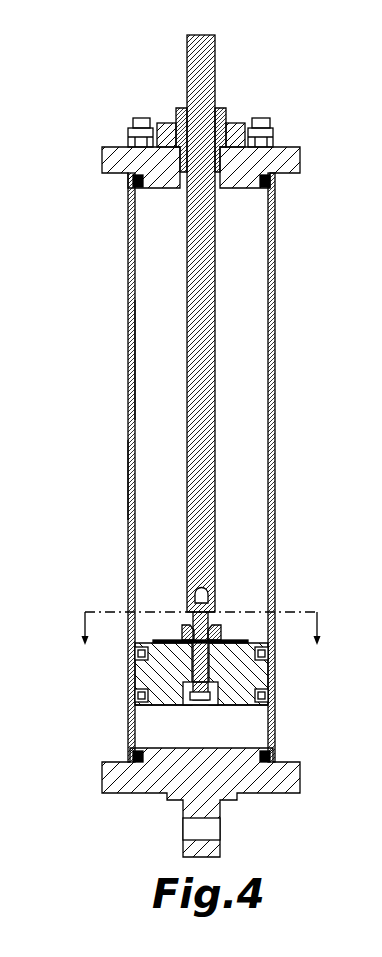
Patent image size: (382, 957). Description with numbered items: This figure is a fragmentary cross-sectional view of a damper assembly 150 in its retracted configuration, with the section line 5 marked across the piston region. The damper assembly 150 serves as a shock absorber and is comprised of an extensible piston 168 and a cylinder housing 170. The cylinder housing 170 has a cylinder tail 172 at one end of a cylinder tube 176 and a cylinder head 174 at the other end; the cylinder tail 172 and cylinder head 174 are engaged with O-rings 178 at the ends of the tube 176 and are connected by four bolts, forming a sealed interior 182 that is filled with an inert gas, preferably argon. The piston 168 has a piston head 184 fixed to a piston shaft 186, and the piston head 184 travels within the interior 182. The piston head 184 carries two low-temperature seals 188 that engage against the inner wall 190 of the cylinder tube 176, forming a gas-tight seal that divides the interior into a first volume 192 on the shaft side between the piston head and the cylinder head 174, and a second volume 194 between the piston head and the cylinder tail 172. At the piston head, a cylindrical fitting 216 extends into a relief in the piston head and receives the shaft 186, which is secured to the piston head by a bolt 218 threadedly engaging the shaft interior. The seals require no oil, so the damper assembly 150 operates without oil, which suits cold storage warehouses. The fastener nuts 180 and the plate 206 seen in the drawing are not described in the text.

The damper assembly 150 is at (115, 353).
The extensible piston 168 is at (217, 52).
The cylinder housing 170 is at (275, 332).
The cylinder tail 172 is at (275, 795).
The cylinder head 174 is at (290, 147).
The cylinder tube 176 is at (275, 493).
The O-rings 178 is at (273, 181).
The fastener nut 180 is at (140, 118).
The sealed interior 182 is at (135, 397).
The piston head 184 is at (173, 705).
The piston shaft 186 is at (187, 287).
The low-temperature seals 188 is at (270, 652).
The inner wall 190 is at (142, 481).
The first volume 192 is at (240, 391).
The second volume 194 is at (162, 732).
The piston plate 206 is at (240, 630).
The cylindrical fitting 216 is at (182, 632).
The bolt 218 is at (213, 668).
The section line 5- 5 is at (200, 619).